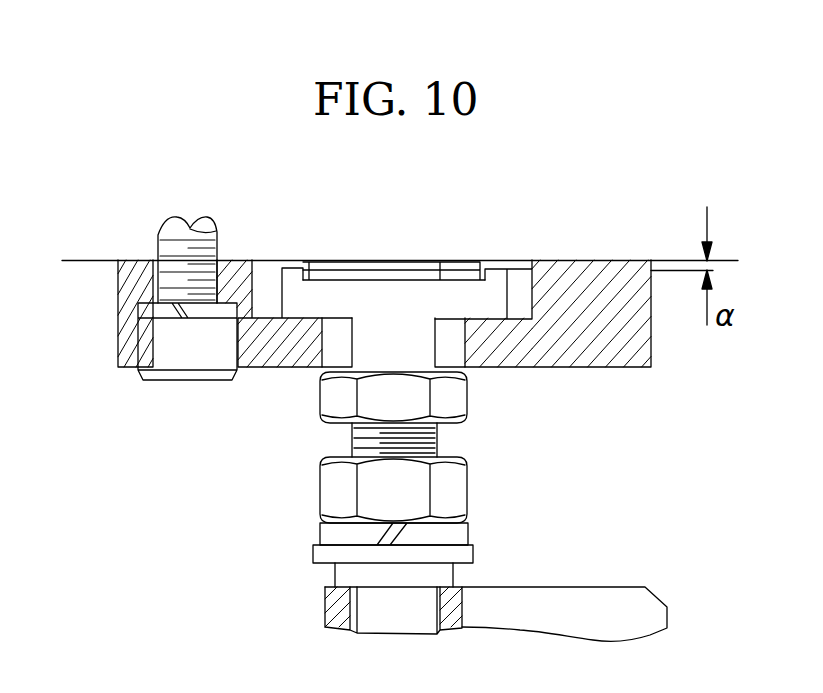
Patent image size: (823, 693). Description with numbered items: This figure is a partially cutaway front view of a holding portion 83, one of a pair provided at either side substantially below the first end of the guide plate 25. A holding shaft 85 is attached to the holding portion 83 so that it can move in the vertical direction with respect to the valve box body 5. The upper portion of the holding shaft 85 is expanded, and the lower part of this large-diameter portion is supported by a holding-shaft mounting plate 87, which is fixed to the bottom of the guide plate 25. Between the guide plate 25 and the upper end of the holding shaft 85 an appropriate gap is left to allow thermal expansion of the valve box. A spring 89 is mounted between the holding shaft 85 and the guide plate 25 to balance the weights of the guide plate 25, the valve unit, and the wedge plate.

The guide plate 25 is at (89, 250).
The holding-shaft mounting plate 87 is at (651, 337).
The spring 89 is at (458, 270).
The holding shaft 85 is at (482, 306).
The holding portion 83 is at (297, 428).
The valve box body 5 is at (592, 608).